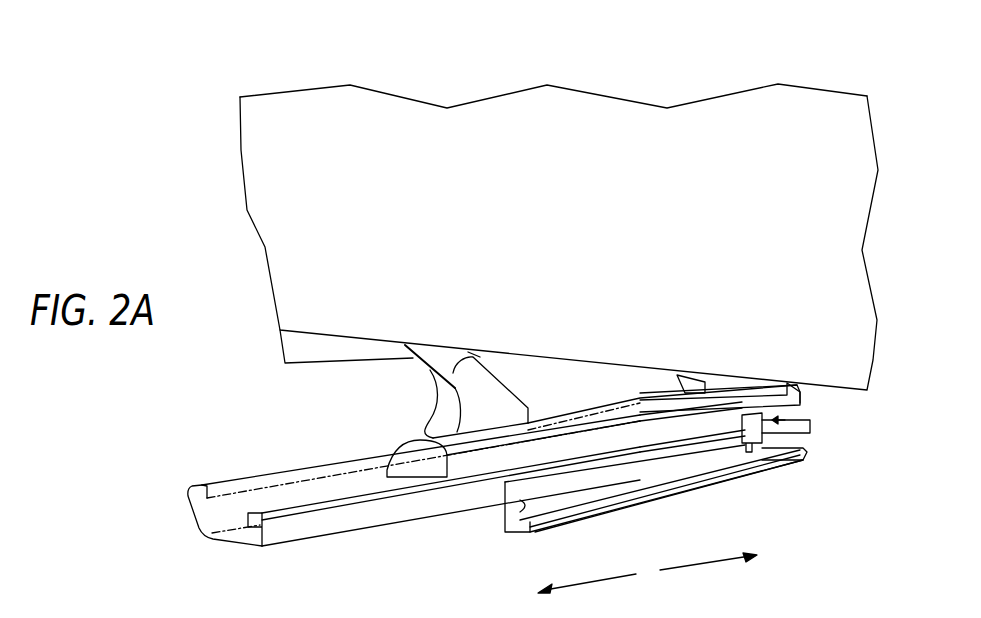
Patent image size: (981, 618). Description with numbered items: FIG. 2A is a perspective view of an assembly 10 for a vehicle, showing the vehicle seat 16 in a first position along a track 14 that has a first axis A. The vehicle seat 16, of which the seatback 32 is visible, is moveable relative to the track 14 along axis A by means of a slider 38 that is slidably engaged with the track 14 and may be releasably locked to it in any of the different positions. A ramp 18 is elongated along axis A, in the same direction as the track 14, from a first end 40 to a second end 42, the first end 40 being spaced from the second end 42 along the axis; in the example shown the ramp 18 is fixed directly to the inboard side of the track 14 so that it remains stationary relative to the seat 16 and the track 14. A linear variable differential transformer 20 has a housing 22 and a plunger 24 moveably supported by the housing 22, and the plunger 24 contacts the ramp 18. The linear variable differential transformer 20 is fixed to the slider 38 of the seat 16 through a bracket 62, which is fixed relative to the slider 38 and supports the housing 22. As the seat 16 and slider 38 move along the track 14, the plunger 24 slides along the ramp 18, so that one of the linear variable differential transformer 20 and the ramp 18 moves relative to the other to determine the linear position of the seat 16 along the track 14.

The assembly 10 is at (710, 47).
The track 14 is at (283, 525).
The vehicle seat 16 is at (235, 154).
The ramp 18 is at (502, 503).
The linear variable differential transformer 20 is at (806, 405).
The housing 22 is at (758, 445).
The plunger 24 is at (748, 455).
The seatback 32 is at (418, 148).
The slider 38 is at (611, 404).
The first end 40 is at (806, 452).
The second end 42 is at (510, 540).
The bracket 62 is at (727, 400).